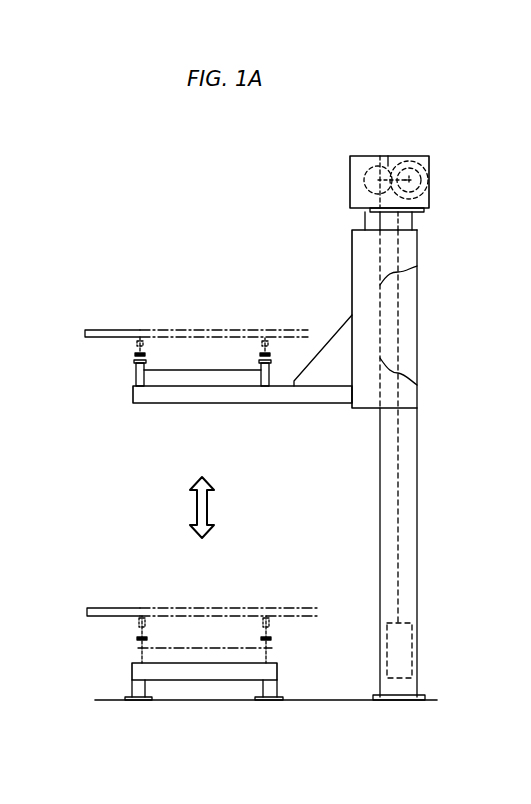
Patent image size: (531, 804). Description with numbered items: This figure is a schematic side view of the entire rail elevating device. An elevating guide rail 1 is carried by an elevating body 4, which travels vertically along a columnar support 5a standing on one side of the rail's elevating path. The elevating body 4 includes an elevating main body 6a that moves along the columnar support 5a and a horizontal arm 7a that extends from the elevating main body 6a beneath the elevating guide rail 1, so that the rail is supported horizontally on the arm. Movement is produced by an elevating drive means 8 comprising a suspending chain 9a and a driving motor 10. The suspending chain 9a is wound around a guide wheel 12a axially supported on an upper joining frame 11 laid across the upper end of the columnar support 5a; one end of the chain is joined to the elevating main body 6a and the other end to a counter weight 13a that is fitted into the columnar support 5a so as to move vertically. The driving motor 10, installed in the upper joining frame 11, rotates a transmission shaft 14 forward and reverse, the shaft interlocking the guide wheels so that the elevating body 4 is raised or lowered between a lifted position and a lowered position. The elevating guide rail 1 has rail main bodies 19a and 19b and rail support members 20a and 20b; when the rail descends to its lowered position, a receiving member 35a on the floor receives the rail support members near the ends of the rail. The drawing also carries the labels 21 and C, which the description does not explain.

The elevating guide rail 1 is at (133, 358).
The elevating body 4 is at (350, 248).
The columnar support 5a is at (410, 495).
The elevating main body 6a is at (365, 290).
The horizontal arm 7a is at (277, 398).
The elevating drive means 8 is at (388, 155).
The suspending chain 9a is at (365, 223).
The driving motor 10 is at (428, 184).
The upper joining frame 11 is at (429, 157).
The guide wheel 12a is at (377, 180).
The counter weight 13a is at (405, 652).
The transmission shaft 14 is at (368, 172).
The rail main body 19a is at (148, 358).
The rail main body 19b is at (258, 358).
The rail support member 20a is at (135, 378).
The rail support member 20b is at (261, 380).
The carriage frame 21 is at (175, 390).
The receiving member 35a is at (205, 672).
The workpiece cassette C is at (127, 328).